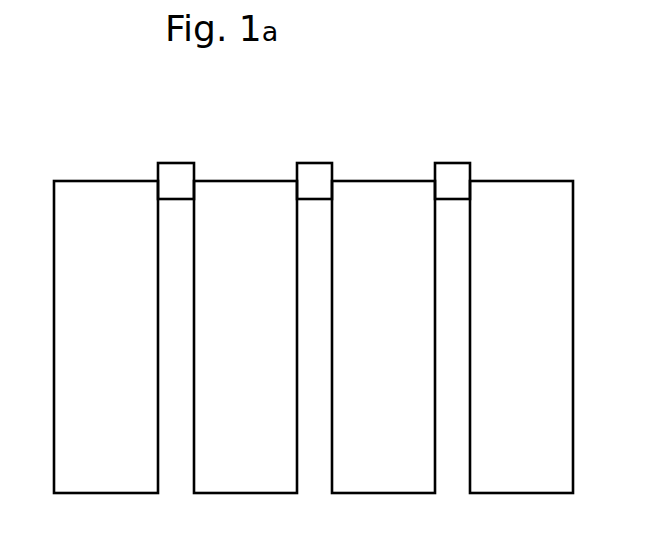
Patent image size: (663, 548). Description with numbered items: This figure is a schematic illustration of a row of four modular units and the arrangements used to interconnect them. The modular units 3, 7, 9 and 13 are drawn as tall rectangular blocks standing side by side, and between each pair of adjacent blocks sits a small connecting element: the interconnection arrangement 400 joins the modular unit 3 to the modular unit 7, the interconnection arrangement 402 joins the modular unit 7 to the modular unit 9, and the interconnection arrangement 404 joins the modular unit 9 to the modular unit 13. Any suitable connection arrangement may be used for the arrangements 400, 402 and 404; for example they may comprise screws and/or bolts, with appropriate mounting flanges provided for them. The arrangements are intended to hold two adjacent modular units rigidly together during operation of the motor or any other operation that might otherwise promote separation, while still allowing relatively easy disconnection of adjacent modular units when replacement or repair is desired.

The modular unit 3 is at (105, 493).
The modular unit 7 is at (243, 493).
The modular unit 9 is at (382, 493).
The modular unit 13 is at (517, 493).
The interconnection arrangement 400 is at (178, 163).
The interconnection arrangement 402 is at (315, 163).
The interconnection arrangement 404 is at (453, 163).